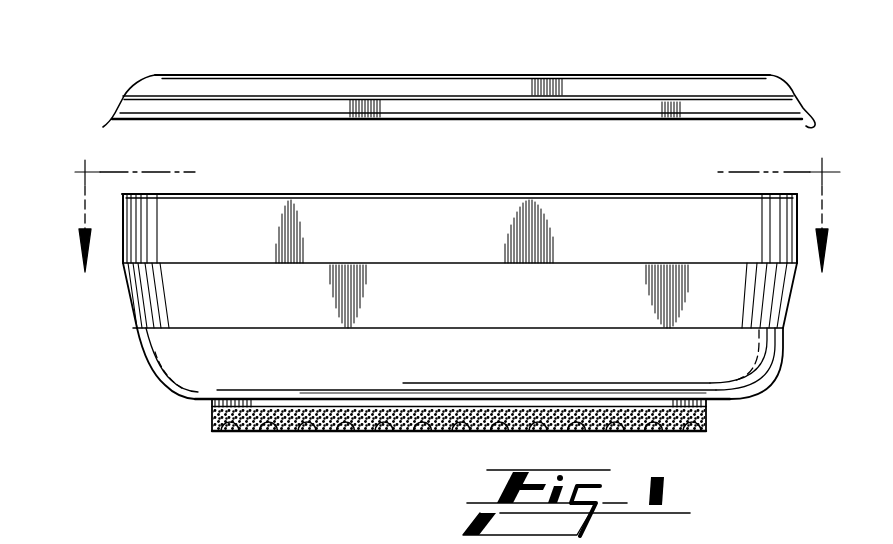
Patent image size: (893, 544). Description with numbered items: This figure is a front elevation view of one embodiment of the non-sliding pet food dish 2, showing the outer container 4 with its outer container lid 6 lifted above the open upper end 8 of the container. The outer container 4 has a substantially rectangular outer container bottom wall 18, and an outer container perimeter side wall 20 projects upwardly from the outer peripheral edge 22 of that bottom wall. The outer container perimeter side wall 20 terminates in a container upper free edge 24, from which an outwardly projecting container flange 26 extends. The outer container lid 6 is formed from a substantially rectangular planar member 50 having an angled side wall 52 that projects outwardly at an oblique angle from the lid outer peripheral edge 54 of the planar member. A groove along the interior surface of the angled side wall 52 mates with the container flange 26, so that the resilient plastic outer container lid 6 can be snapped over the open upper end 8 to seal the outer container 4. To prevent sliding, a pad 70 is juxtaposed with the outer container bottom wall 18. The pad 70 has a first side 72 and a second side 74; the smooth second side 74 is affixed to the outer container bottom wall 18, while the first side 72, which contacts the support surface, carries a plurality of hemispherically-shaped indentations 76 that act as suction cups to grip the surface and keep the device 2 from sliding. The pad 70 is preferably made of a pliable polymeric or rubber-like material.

The non-sliding pet food dish 2 is at (80, 316).
The outer container 4 is at (730, 300).
The outer container lid 6 is at (567, 52).
The open upper end 8 is at (453, 172).
The outer container bottom wall 18 is at (253, 405).
The outer container perimeter side wall 20 is at (188, 298).
The outer peripheral edge 22 is at (743, 395).
The container upper free edge 24 is at (566, 193).
The container flange 26 is at (219, 193).
The planar member 50 is at (473, 75).
The angled side wall 52 is at (124, 98).
The lid outer peripheral edge 54 is at (110, 119).
The pad 70 is at (437, 417).
The first side 72 is at (323, 432).
The second side 74 is at (332, 405).
The indentations 76 is at (427, 431).